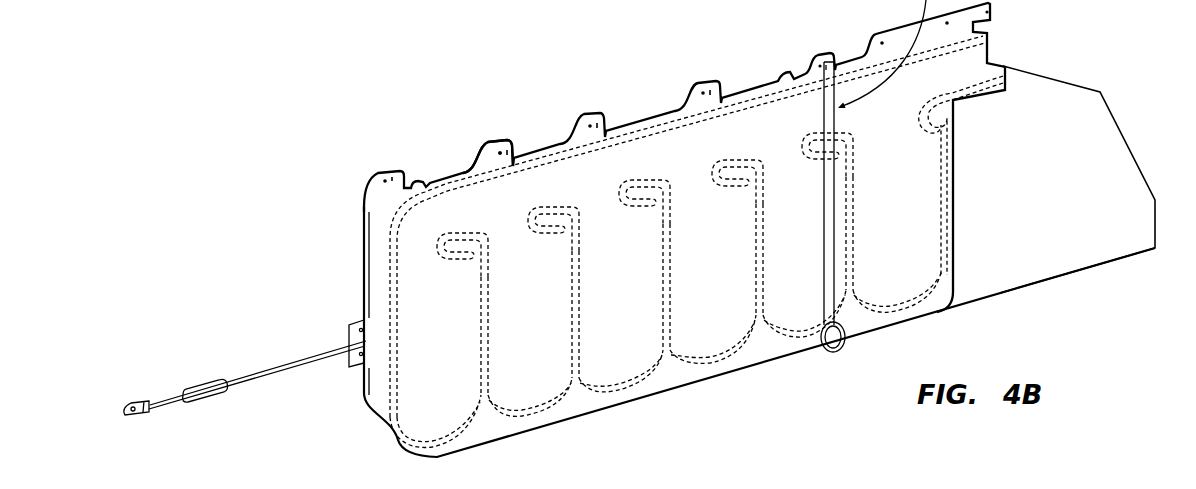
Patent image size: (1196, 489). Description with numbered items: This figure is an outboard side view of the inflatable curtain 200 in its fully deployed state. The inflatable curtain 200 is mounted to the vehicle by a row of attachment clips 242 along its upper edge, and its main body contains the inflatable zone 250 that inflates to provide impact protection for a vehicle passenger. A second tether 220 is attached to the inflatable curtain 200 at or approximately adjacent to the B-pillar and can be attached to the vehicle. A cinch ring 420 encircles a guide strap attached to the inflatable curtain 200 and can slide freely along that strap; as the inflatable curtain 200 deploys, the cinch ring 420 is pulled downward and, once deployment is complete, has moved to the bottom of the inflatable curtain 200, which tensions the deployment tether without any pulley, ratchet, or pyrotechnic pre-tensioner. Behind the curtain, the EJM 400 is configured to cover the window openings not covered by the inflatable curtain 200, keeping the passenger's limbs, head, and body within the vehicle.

The inflatable curtain 200 is at (650, 90).
The attachment clips 242 is at (493, 140).
The inflatable zone 250 is at (638, 307).
The second tether 220 is at (207, 378).
The EJM 400 is at (1060, 117).
The cinch ring 420 is at (832, 353).